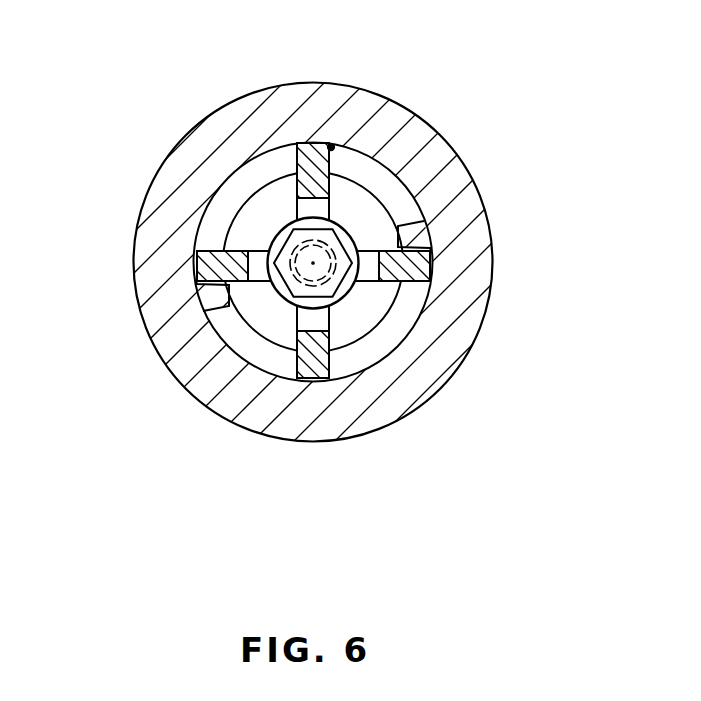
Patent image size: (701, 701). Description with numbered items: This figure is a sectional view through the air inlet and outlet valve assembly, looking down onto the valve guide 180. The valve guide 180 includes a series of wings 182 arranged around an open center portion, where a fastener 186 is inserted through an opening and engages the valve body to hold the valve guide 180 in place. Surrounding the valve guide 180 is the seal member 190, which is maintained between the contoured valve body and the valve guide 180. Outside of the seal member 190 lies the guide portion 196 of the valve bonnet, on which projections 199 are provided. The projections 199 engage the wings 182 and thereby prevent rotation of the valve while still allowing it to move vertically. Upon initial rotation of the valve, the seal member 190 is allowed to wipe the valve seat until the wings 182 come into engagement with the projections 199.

The valve guide 180 is at (332, 146).
The wings 182 is at (318, 338).
The fastener 186 is at (333, 250).
The seal member 190 is at (222, 207).
The guide portion 196 is at (450, 210).
The projections 199 is at (420, 233).